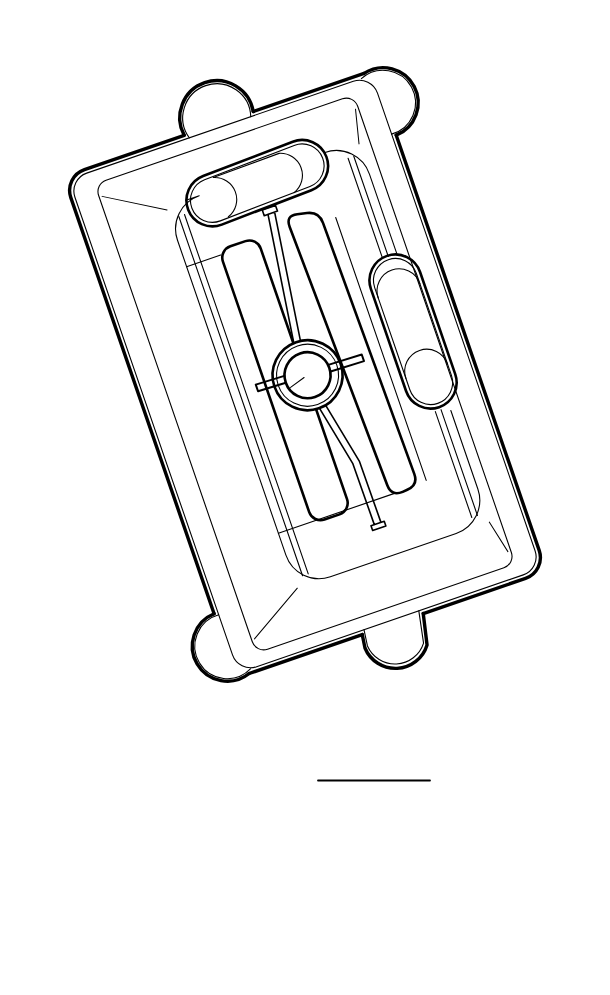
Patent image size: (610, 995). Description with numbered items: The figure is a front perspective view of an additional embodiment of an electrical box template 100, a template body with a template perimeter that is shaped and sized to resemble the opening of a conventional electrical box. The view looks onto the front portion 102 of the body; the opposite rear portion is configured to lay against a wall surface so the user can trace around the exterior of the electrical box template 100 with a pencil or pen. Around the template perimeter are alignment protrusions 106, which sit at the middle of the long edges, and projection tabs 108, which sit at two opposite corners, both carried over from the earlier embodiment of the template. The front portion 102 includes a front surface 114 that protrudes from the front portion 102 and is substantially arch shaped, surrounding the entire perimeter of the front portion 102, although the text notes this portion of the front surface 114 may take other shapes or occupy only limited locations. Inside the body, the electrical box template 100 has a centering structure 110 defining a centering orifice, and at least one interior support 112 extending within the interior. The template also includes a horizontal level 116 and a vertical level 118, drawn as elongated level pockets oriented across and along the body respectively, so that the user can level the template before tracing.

The electrical box template 100 is at (319, 391).
The front portion 102 is at (463, 560).
The alignment protrusions 106 is at (222, 98).
The projection tabs 108 is at (414, 121).
The centering structure 110 is at (250, 417).
The interior support 112 is at (420, 438).
The front surface 114 is at (174, 297).
The horizontal level 116 is at (207, 197).
The vertical level 118 is at (412, 322).